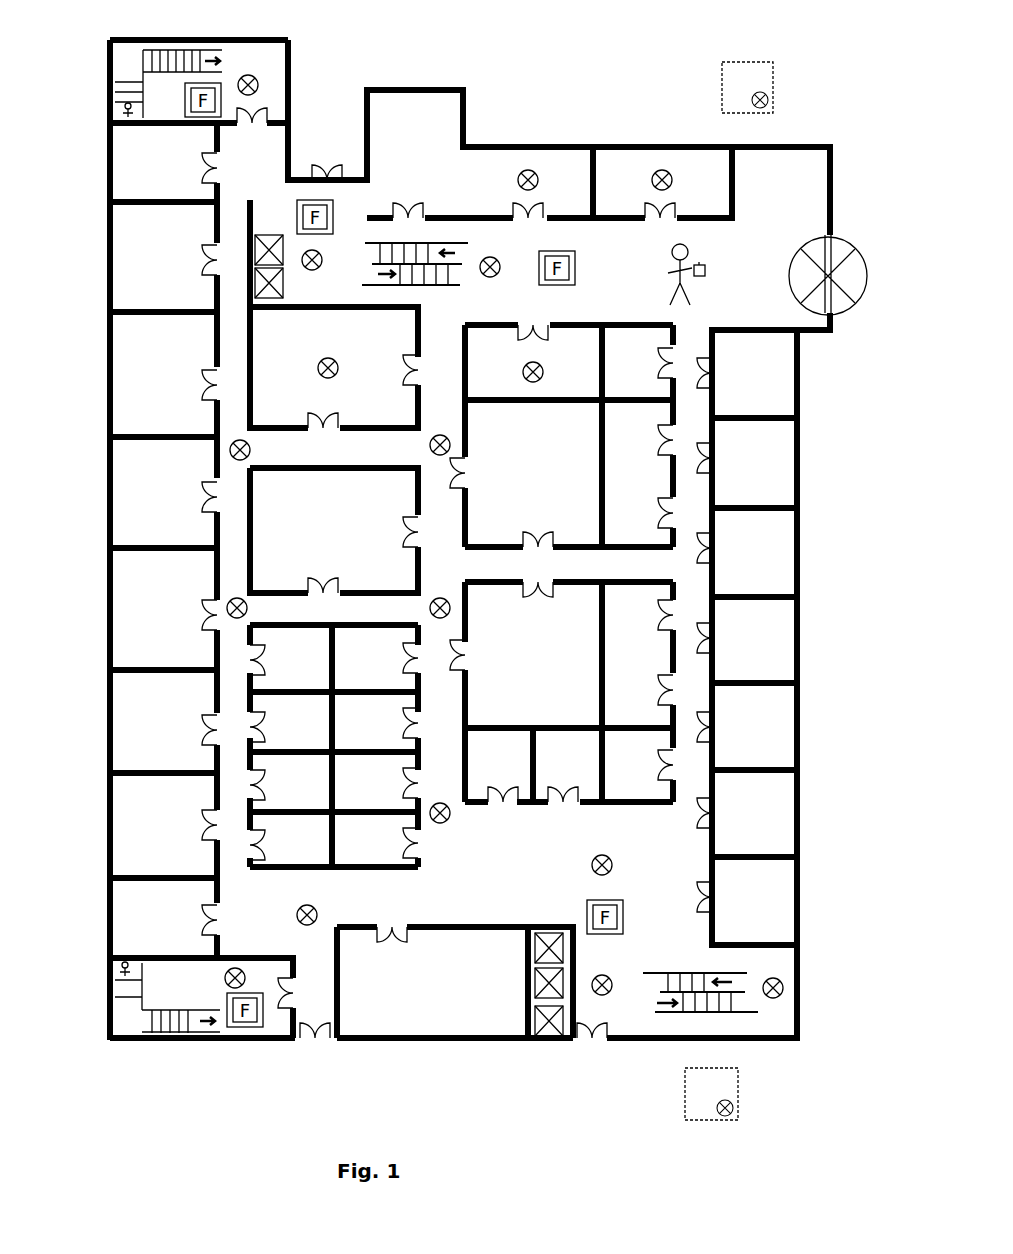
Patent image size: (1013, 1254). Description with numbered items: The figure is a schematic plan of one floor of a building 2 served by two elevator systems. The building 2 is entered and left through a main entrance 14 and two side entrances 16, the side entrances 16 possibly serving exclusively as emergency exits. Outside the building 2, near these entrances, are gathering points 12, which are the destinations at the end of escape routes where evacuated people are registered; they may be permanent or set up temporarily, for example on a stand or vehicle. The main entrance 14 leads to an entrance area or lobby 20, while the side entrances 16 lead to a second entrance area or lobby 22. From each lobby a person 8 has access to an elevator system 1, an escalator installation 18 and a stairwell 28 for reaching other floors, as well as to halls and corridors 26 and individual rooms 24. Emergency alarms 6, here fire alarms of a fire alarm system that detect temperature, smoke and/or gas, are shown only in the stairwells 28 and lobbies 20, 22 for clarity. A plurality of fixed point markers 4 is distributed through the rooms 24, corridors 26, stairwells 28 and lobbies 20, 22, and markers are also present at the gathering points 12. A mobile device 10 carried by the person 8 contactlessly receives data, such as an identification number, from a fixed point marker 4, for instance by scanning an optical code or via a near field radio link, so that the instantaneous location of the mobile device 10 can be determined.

The elevator system 1 is at (291, 281).
The building 2 is at (472, 79).
The fixed point marker 4 is at (258, 80).
The emergency alarm 6 is at (563, 250).
The person 8 is at (689, 250).
The mobile device 10 is at (706, 276).
The gathering point 12 is at (776, 85).
The main entrance 14 is at (850, 247).
The side entrance 16 is at (315, 1041).
The escalator installation 18 is at (428, 288).
The entrance area 20 is at (614, 284).
The entrance area 22 is at (500, 882).
The room 24 is at (547, 160).
The corridor 26 is at (233, 682).
The stairwell 28 is at (157, 80).